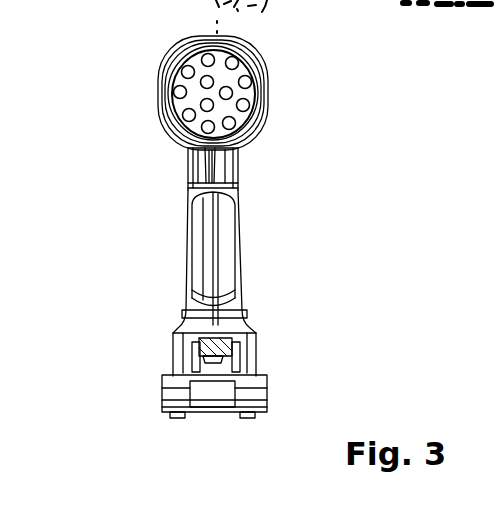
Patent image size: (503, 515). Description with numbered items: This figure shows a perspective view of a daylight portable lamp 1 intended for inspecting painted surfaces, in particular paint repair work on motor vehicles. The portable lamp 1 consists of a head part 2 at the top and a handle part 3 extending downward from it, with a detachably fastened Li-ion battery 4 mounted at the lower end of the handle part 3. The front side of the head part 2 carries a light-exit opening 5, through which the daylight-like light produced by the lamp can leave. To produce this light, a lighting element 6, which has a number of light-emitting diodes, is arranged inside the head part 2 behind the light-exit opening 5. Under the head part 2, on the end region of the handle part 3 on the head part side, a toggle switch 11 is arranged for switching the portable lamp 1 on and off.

The daylight portable lamp 1 is at (118, 91).
The head part 2 is at (262, 113).
The handle part 3 is at (243, 231).
The Li-ion battery 4 is at (262, 361).
The light-exit opening 5 is at (249, 74).
The lighting element 6 is at (163, 111).
The toggle switch 11 is at (240, 160).